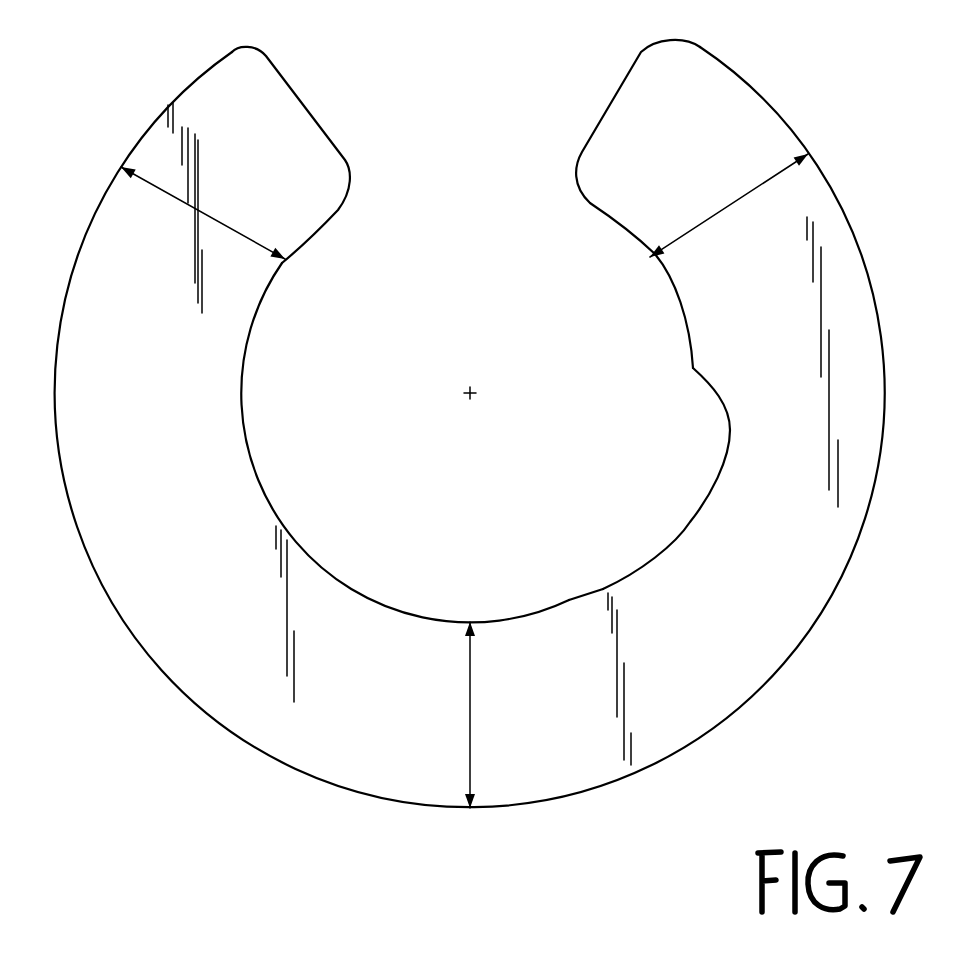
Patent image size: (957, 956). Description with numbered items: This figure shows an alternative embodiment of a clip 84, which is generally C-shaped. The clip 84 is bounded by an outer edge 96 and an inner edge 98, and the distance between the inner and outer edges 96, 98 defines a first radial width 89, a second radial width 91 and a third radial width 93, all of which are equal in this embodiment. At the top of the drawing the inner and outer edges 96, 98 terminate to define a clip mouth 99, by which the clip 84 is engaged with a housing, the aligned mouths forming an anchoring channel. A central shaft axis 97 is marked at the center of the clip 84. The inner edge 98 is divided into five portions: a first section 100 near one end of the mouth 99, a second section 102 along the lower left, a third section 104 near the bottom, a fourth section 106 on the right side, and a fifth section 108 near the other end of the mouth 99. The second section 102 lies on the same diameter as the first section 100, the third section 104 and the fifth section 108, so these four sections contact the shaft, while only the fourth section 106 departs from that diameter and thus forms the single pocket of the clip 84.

The clip 84 is at (470, 437).
The first radial width 89 is at (212, 221).
The second radial width 91 is at (472, 715).
The third radial width 93 is at (730, 203).
The outer edge 96 is at (587, 794).
The central shaft axis 97 is at (476, 396).
The inner edge 98 is at (339, 577).
The clip mouth 99 is at (435, 129).
The first section 100 is at (272, 284).
The second section 102 is at (270, 501).
The third section 104 is at (527, 613).
The fourth section 106 is at (690, 522).
The fifth section 108 is at (680, 292).